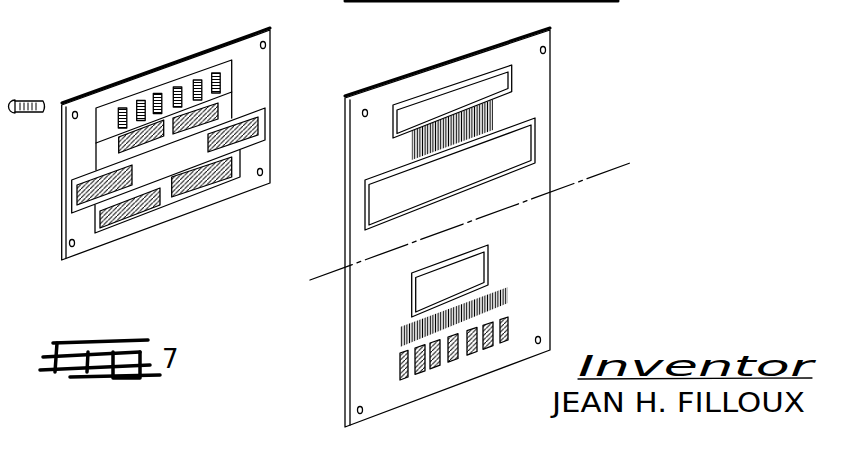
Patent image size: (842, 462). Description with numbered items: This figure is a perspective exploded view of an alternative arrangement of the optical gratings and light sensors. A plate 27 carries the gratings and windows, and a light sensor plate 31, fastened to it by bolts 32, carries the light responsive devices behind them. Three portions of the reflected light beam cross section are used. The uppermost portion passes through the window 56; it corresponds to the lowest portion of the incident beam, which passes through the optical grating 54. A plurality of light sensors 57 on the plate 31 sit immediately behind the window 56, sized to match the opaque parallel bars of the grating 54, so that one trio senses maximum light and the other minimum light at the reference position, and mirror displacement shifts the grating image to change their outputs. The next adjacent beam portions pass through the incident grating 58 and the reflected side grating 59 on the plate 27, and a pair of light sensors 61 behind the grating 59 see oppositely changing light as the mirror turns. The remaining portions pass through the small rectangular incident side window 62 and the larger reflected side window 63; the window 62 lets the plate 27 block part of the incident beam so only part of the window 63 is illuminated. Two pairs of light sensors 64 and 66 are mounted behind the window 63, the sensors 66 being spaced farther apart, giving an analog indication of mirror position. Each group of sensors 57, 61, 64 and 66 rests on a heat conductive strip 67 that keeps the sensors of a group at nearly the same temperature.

The plate 27 is at (545, 78).
The light sensor plate 31 is at (268, 66).
The bolt 32 is at (28, 100).
The optical grating 54 is at (472, 352).
The window 56 is at (417, 113).
The light sensors 57 is at (178, 100).
The incident grating 58 is at (500, 302).
The reflected side grating 59 is at (480, 120).
The light sensors 61 is at (175, 122).
The incident side window 62 is at (480, 272).
The reflected side window 63 is at (525, 153).
The light sensors 64 is at (184, 192).
The light sensors 66 is at (262, 122).
The strip 67 is at (225, 98).